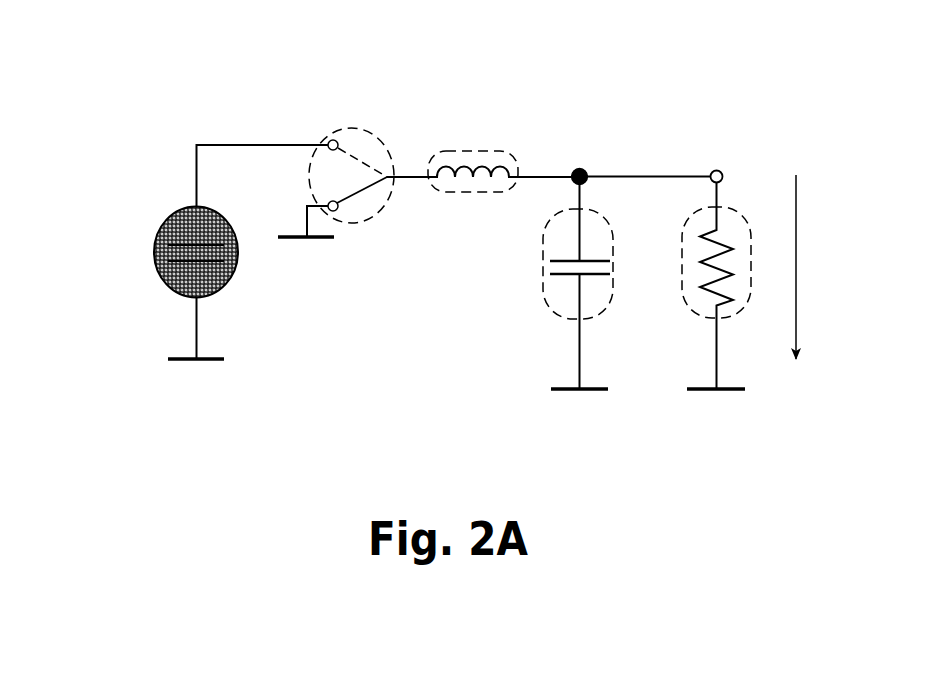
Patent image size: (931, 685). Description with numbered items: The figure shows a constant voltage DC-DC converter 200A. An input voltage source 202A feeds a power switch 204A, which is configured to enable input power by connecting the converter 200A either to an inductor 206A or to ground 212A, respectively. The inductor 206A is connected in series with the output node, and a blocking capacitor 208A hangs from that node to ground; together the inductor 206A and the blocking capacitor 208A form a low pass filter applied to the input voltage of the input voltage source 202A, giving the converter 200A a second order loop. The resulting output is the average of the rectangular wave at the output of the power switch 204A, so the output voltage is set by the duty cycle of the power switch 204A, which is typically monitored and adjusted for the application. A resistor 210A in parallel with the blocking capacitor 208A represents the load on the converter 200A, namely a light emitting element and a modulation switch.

The constant voltage DC-DC converter 200A is at (121, 34).
The input voltage source 202A is at (167, 211).
The power switch 204A is at (372, 128).
The inductor 206A is at (504, 150).
The blocking capacitor 208A is at (556, 319).
The resistor 210A is at (705, 319).
The ground 212A is at (327, 243).